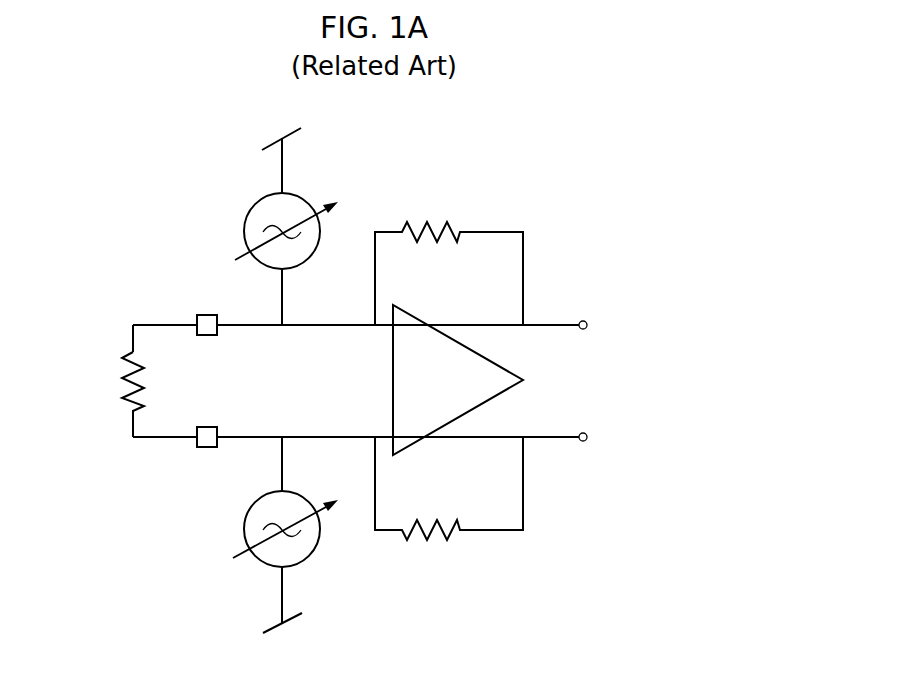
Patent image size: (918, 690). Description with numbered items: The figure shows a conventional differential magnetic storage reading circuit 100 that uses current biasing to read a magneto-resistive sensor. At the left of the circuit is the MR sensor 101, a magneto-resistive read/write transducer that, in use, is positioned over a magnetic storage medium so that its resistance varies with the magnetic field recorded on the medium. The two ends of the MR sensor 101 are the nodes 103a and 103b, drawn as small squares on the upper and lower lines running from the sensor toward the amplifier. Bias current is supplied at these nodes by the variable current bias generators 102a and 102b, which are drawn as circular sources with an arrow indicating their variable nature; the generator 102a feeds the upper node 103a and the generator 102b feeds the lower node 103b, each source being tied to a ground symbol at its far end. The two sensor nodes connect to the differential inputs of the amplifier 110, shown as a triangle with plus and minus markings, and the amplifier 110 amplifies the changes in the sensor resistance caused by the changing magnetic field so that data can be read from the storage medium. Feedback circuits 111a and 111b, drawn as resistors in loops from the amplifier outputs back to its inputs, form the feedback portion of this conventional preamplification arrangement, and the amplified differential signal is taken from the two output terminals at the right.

The differential magnetic storage reading circuit 100 is at (508, 126).
The MR sensor 101 is at (115, 367).
The variable current bias generator 102a is at (302, 196).
The variable current bias generator 102b is at (308, 568).
The node 103a is at (210, 337).
The node 103b is at (213, 427).
The amplifier 110 is at (507, 364).
The feedback circuit 111a is at (452, 224).
The feedback circuit 111b is at (458, 543).